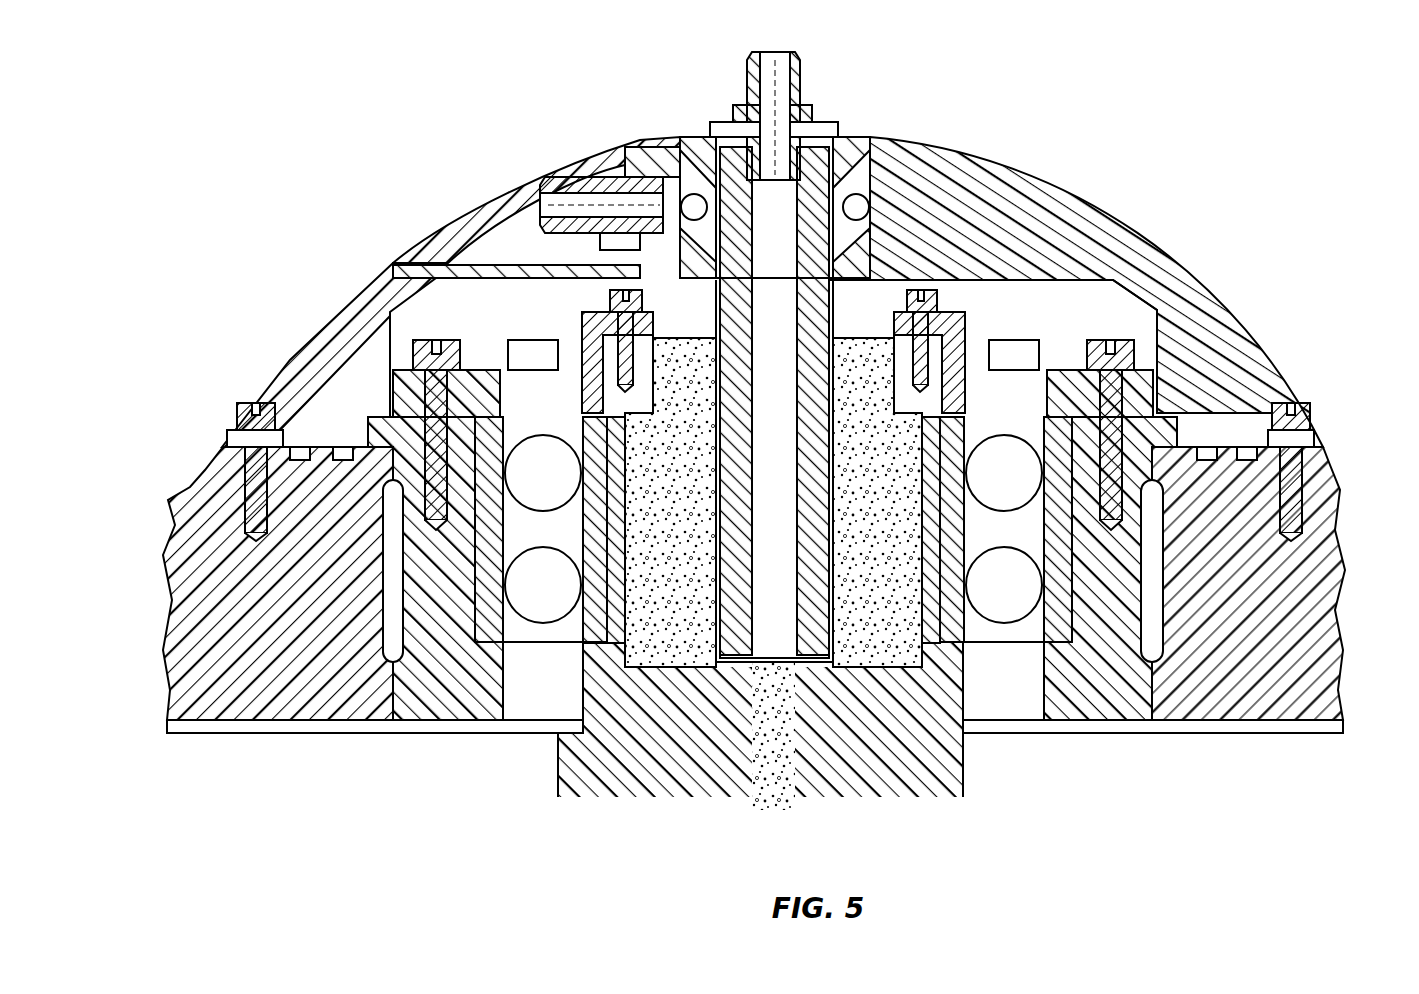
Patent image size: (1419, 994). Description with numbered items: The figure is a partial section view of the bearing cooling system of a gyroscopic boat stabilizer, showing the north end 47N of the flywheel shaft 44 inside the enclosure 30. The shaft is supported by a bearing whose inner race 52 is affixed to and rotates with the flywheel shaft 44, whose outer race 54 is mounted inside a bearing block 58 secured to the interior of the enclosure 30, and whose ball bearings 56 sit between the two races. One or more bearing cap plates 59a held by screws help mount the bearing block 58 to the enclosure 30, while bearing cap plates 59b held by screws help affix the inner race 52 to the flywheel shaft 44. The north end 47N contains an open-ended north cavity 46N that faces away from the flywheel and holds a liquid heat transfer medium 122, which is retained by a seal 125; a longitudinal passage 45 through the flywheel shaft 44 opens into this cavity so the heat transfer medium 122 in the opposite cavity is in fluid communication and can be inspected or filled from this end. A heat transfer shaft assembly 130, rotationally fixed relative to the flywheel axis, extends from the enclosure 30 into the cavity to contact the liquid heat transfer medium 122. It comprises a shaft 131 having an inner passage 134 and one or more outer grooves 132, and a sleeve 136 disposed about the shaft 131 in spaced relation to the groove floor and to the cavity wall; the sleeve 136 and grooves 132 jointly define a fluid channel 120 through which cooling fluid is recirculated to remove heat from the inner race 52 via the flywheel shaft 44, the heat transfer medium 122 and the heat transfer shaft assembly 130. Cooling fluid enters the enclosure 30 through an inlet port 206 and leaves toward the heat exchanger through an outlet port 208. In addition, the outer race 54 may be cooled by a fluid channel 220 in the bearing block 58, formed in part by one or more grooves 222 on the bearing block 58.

The enclosure 30 is at (223, 545).
The flywheel shaft 44 is at (582, 695).
The longitudinal passage 45 is at (775, 778).
The north cavity 46N is at (953, 340).
The north end 47N is at (967, 643).
The inner race 52 is at (577, 640).
The outer race 54 is at (492, 627).
The ball bearings 56 is at (1018, 603).
The bearing block 58 is at (413, 697).
The bearing cap plate 59a is at (1110, 358).
The bearing cap plate 59b is at (920, 362).
The fluid channel 120 is at (716, 452).
The liquid heat transfer medium 122 is at (683, 607).
The seal 125 is at (857, 304).
The heat transfer shaft assembly 130 is at (803, 672).
The shaft 131 is at (830, 637).
The outer groove 132 is at (823, 547).
The inner passage 134 is at (773, 627).
The sleeve 136 is at (713, 597).
The inlet port 206 is at (603, 177).
The outlet port 208 is at (793, 95).
The fluid channel 220 is at (1262, 385).
The groove 222 is at (1153, 515).